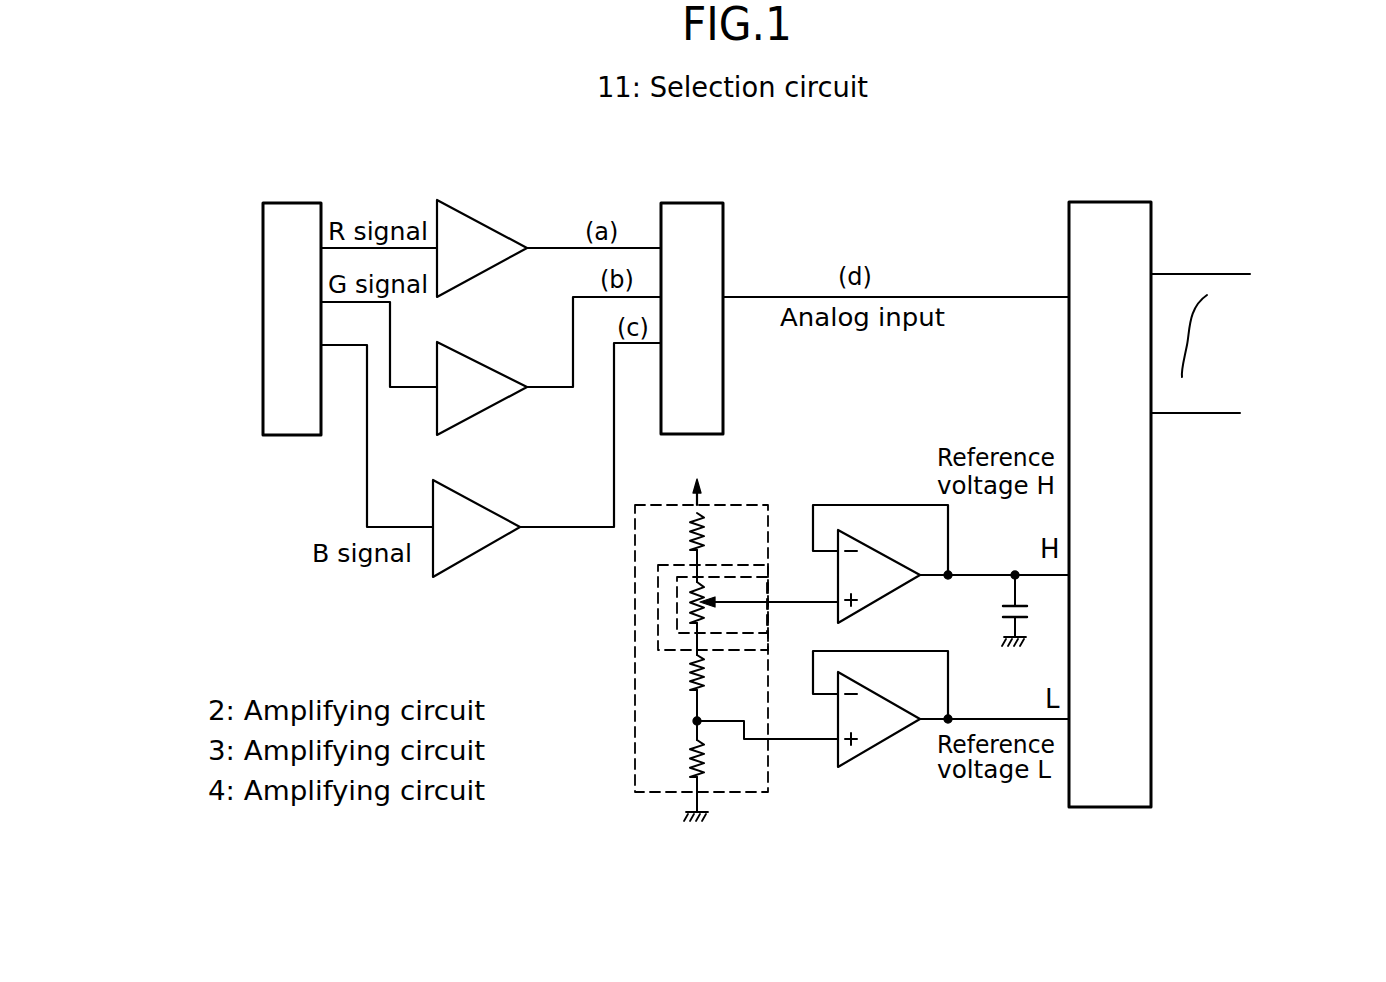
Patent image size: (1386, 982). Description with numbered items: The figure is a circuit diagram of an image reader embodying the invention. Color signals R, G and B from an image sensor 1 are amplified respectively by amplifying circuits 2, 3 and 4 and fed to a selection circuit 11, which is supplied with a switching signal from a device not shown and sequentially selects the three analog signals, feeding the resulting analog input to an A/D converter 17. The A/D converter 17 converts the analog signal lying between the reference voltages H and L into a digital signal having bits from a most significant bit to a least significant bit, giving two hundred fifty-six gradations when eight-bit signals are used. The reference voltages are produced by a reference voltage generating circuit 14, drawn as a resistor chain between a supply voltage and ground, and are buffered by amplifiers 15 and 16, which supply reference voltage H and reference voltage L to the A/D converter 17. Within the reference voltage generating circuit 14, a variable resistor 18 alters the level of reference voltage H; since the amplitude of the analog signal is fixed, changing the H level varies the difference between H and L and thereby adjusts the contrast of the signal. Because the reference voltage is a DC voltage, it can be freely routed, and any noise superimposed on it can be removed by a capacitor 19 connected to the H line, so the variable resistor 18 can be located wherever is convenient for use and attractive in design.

The image sensor 1 is at (283, 216).
The amplifying circuit 2 is at (482, 224).
The amplifying circuit 3 is at (470, 364).
The amplifying circuit 4 is at (464, 500).
The selection circuit 11 is at (686, 204).
The reference voltage generating circuit 14 is at (635, 637).
The amplifier 15 is at (895, 593).
The amplifier 16 is at (895, 737).
The A/D converter 17 is at (1069, 246).
The variable resistor 18 is at (770, 613).
The capacitor 19 is at (1009, 613).